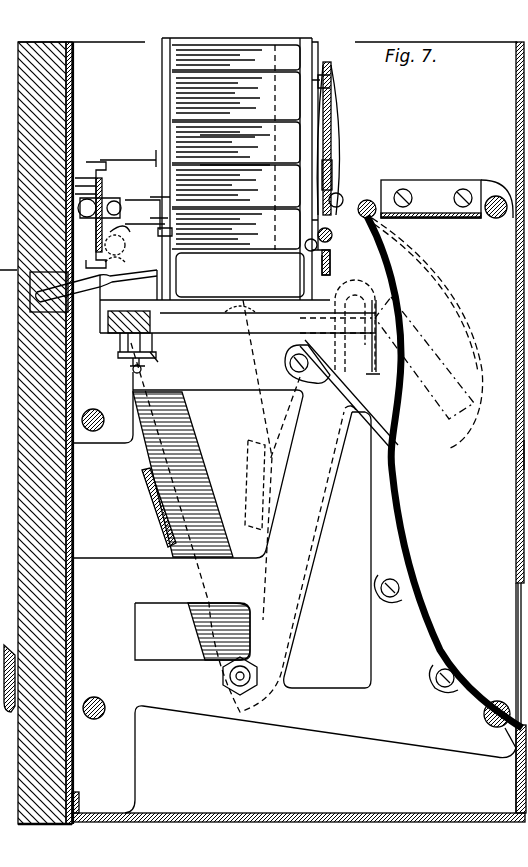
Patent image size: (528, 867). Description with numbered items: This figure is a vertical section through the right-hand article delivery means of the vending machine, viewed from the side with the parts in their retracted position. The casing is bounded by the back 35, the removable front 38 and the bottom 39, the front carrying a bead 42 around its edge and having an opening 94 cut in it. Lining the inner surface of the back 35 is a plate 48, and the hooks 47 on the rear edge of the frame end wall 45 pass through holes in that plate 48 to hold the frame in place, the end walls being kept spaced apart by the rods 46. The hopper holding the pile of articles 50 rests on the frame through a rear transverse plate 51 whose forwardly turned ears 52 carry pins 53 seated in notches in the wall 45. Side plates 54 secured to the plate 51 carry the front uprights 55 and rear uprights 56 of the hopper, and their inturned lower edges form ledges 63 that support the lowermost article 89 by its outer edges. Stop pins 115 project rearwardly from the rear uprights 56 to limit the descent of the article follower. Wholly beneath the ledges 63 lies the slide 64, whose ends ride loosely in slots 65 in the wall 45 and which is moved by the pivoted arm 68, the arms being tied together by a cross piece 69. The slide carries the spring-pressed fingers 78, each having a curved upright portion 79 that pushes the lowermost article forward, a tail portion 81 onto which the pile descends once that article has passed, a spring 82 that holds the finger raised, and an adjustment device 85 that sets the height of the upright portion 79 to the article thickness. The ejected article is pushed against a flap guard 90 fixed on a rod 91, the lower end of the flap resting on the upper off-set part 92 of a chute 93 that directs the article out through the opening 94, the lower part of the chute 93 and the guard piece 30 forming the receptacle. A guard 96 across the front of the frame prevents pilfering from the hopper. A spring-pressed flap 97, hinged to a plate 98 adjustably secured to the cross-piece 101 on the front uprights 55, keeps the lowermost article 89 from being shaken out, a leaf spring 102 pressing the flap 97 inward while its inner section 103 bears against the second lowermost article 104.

The guard piece 30 is at (527, 662).
The back 35 is at (57, 137).
The removable front 38 is at (515, 118).
The bottom 39 is at (262, 796).
The bead 42 is at (516, 446).
The end wall 45 is at (438, 213).
The rods 46 is at (497, 196).
The hooks 47 is at (74, 645).
The plate 48 is at (75, 106).
The articles 50 is at (180, 70).
The rear transversely arranged plate 51 is at (102, 165).
The forwardly turned ears 52 is at (96, 292).
The pins 53 is at (172, 208).
The side plates 54 is at (128, 148).
The front uprights 55 is at (314, 48).
The rear uprights 56 is at (165, 58).
The ledges 63 is at (238, 317).
The slide 64 is at (108, 320).
The slots 65 is at (281, 332).
The arm 68 is at (178, 472).
The cross piece 69 is at (262, 478).
The fingers 78 is at (156, 348).
The upright portions 79 is at (362, 350).
The tail portion 81 is at (148, 282).
The spring 82 is at (134, 368).
The adjustment device 85 is at (158, 358).
The lowermost article 89 is at (455, 445).
The flap guard 90 is at (397, 282).
The rod 91 is at (372, 203).
The upper off-set part 92 is at (385, 432).
The chute 93 is at (404, 515).
The opening 94 is at (505, 606).
The guard 96 is at (470, 217).
The spring pressed flap 97 is at (331, 266).
The vertically arranged plate 98 is at (330, 130).
The cross-piece 101 is at (300, 168).
The leaf spring 102 is at (340, 136).
The inner section 103 is at (300, 133).
The second lowermost article 104 is at (340, 180).
The stop pins 115 is at (158, 192).